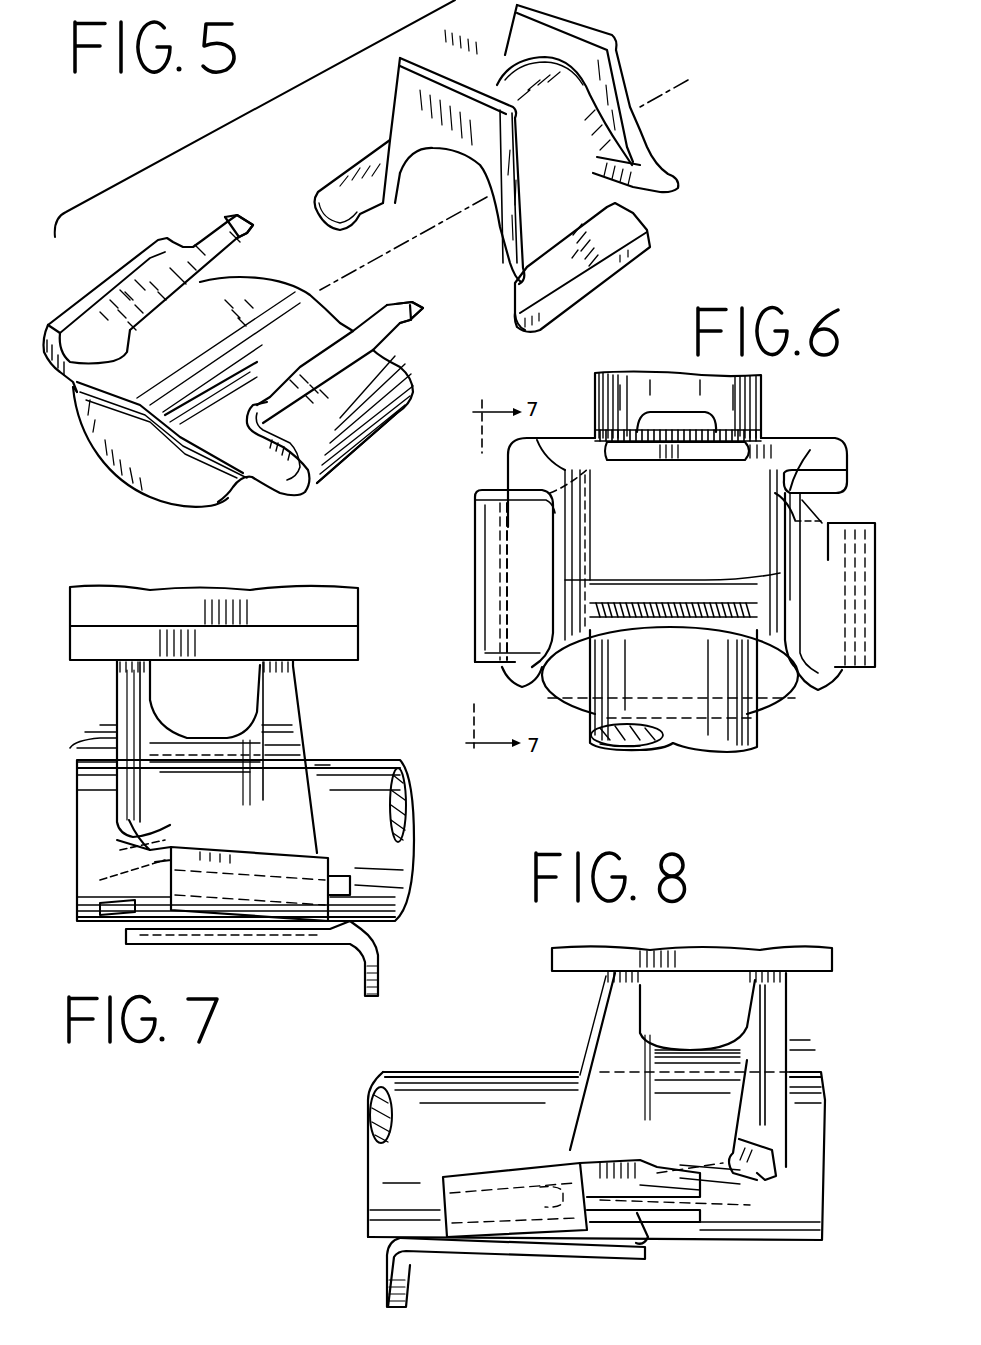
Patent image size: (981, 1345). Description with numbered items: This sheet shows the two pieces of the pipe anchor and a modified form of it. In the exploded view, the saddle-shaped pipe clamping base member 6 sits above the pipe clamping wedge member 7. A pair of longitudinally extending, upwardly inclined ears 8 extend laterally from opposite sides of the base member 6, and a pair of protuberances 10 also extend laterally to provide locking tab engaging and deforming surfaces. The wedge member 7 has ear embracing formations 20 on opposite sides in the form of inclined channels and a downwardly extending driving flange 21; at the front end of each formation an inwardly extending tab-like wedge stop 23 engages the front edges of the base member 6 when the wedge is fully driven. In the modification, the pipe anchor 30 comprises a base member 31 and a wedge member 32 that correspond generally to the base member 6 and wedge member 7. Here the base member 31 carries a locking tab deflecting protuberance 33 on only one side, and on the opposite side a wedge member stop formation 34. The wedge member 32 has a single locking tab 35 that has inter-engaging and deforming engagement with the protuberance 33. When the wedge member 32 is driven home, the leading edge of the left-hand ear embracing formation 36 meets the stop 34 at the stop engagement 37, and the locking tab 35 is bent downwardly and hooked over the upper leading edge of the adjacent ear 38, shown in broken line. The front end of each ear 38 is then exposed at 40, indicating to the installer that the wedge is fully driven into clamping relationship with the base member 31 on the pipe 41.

In FIG. 5, the pipe clamping base member 6 is at (650, 65).
In FIG. 5, the pipe clamping wedge member 7 is at (196, 214).
In FIG. 5, the ears 8 is at (640, 253).
In FIG. 5, the protuberances 10 is at (667, 182).
In FIG. 5, the ear embracing formations 20 is at (367, 450).
In FIG. 5, the driving flange 21 is at (148, 497).
In FIG. 5, the wedge stops 23 is at (515, 317).
In FIG. 5, the locking tab 35 is at (242, 222).
In FIG. 6, the locking tab 35 is at (836, 509).
In FIG. 7, the locking tab 35 is at (112, 910).
In FIG. 8, the locking tab 35 is at (608, 1158).
In FIG. 6, the pipe anchor 30 is at (792, 398).
In FIG. 7, the pipe anchor 30 is at (333, 707).
In FIG. 6, the base member 31 is at (671, 562).
In FIG. 7, the base member 31 is at (108, 698).
In FIG. 8, the base member 31 is at (785, 1015).
In FIG. 7, the wedge member 32 is at (267, 841).
In FIG. 6, the locking tab deflecting protuberance 33 is at (814, 449).
In FIG. 8, the locking tab deflecting protuberance 33 is at (761, 1161).
In FIG. 6, the wedge member stop formation 34 is at (527, 460).
In FIG. 7, the wedge member stop formation 34 is at (141, 847).
In FIG. 6, the left-hand ear embracing formation 36 is at (477, 597).
In FIG. 8, the left-hand ear embracing formation 36 is at (509, 1165).
In FIG. 7, the stop engagement 37 is at (167, 845).
In FIG. 7, the ear 38 is at (249, 947).
In FIG. 8, the ear 38 is at (679, 1169).
In FIG. 6, the exposed front end of ear 40 is at (508, 680).
In FIG. 7, the exposed front end of ear 40 is at (343, 880).
In FIG. 6, the pipe 41 is at (739, 748).
In FIG. 7, the pipe 41 is at (250, 823).
In FIG. 8, the pipe 41 is at (526, 1064).